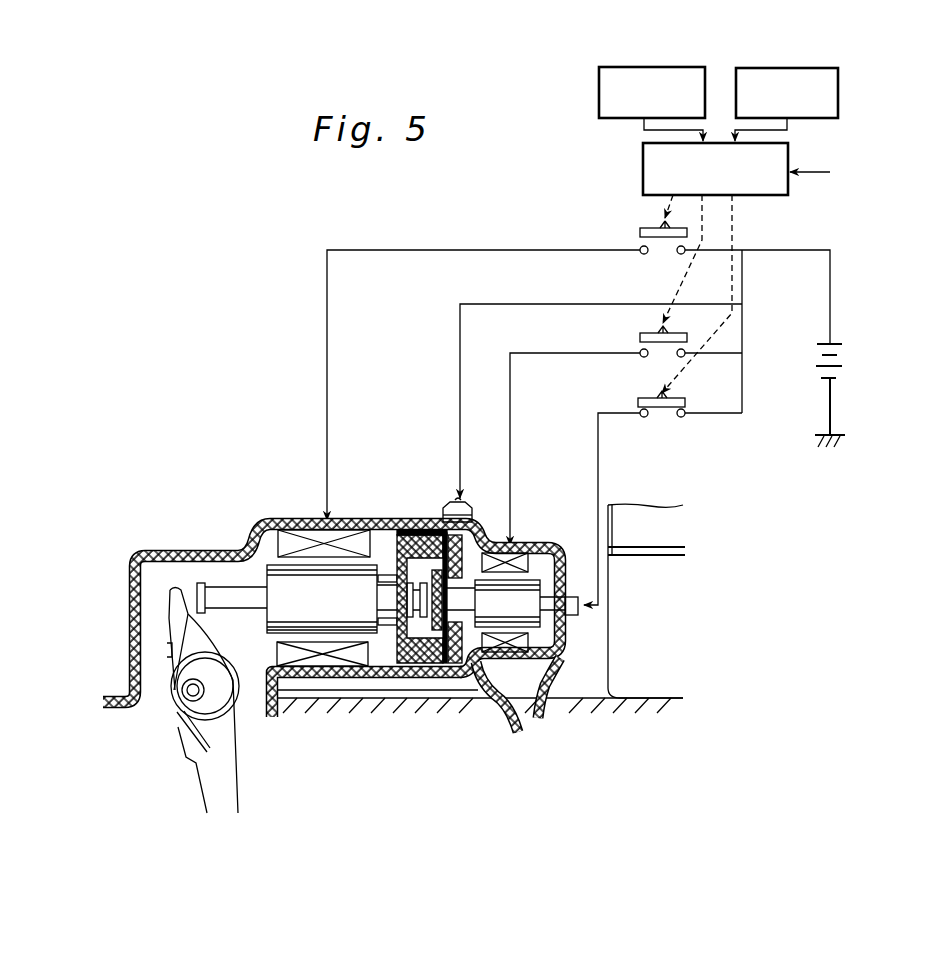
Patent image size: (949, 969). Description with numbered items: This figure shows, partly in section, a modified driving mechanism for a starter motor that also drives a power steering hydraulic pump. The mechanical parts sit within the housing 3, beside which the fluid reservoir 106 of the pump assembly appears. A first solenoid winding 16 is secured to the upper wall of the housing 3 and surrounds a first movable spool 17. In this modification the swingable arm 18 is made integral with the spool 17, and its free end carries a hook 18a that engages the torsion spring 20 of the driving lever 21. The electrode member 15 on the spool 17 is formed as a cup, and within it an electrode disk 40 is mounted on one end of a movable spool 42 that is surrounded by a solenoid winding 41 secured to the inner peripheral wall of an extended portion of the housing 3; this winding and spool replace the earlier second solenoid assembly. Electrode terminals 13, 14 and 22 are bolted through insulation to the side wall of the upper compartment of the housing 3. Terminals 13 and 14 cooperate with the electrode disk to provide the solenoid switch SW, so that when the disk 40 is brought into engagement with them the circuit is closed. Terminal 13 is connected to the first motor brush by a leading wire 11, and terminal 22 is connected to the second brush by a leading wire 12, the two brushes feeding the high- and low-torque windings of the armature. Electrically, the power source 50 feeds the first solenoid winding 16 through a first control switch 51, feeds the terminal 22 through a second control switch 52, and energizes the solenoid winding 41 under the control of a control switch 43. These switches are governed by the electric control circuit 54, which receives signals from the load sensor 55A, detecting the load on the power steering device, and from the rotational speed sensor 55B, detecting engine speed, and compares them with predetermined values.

The housing 3 is at (130, 610).
The leading wire 11 is at (477, 684).
The leading wire 12 is at (558, 676).
The electrode terminal 13 is at (450, 664).
The electrode terminal 14 is at (467, 543).
The electrode disk 15 is at (402, 533).
The first solenoid winding 16 is at (360, 545).
The first movable spool 17 is at (282, 578).
The swingable arm 18 is at (233, 593).
The hook 18a is at (197, 583).
The torsion spring 20 is at (230, 712).
The driving lever 21 is at (223, 768).
The electrode terminal 22 is at (583, 614).
The electrode disk 40 is at (432, 568).
The solenoid winding 41 is at (518, 548).
The movable spool 42 is at (527, 597).
The control switch 43 is at (648, 333).
The electric power source 50 is at (817, 358).
The first control switch 51 is at (655, 224).
The second control switch 52 is at (663, 417).
The electric control circuit 54 is at (643, 155).
The load sensor 55A is at (599, 84).
The rotational speed sensor 55B is at (838, 78).
The solenoid switch SW is at (438, 525).
The fluid reservoir 106 is at (642, 587).